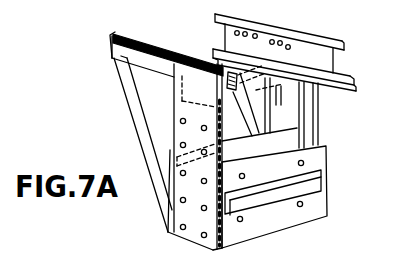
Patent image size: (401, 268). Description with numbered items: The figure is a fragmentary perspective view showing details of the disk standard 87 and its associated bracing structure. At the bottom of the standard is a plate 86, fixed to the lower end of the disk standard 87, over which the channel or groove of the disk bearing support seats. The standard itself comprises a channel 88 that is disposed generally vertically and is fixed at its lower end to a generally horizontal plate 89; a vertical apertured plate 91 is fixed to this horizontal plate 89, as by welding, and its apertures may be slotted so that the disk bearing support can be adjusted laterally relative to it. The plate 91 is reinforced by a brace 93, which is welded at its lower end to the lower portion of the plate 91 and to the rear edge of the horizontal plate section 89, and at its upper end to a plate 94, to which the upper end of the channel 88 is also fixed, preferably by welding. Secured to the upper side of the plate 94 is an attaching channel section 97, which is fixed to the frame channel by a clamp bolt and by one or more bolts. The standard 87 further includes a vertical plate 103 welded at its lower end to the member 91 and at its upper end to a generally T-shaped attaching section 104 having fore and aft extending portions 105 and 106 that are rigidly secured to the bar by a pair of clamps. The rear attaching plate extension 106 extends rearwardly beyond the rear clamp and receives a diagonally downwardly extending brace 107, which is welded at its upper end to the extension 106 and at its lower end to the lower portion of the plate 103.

The plate 86 is at (294, 192).
The disk standard 87 is at (331, 108).
The channel 88 is at (333, 115).
The plate 89 is at (289, 147).
The vertical apertured plate 91 is at (274, 206).
The brace 93 is at (240, 114).
The plate 94 is at (300, 75).
The attaching channel section 97 is at (297, 43).
The vertical plate 103 is at (179, 119).
The T-shaped attaching section 104 is at (163, 34).
The fore extending portion 105 is at (295, 92).
The rear attaching plate extension 106 is at (86, 47).
The brace 107 is at (118, 144).